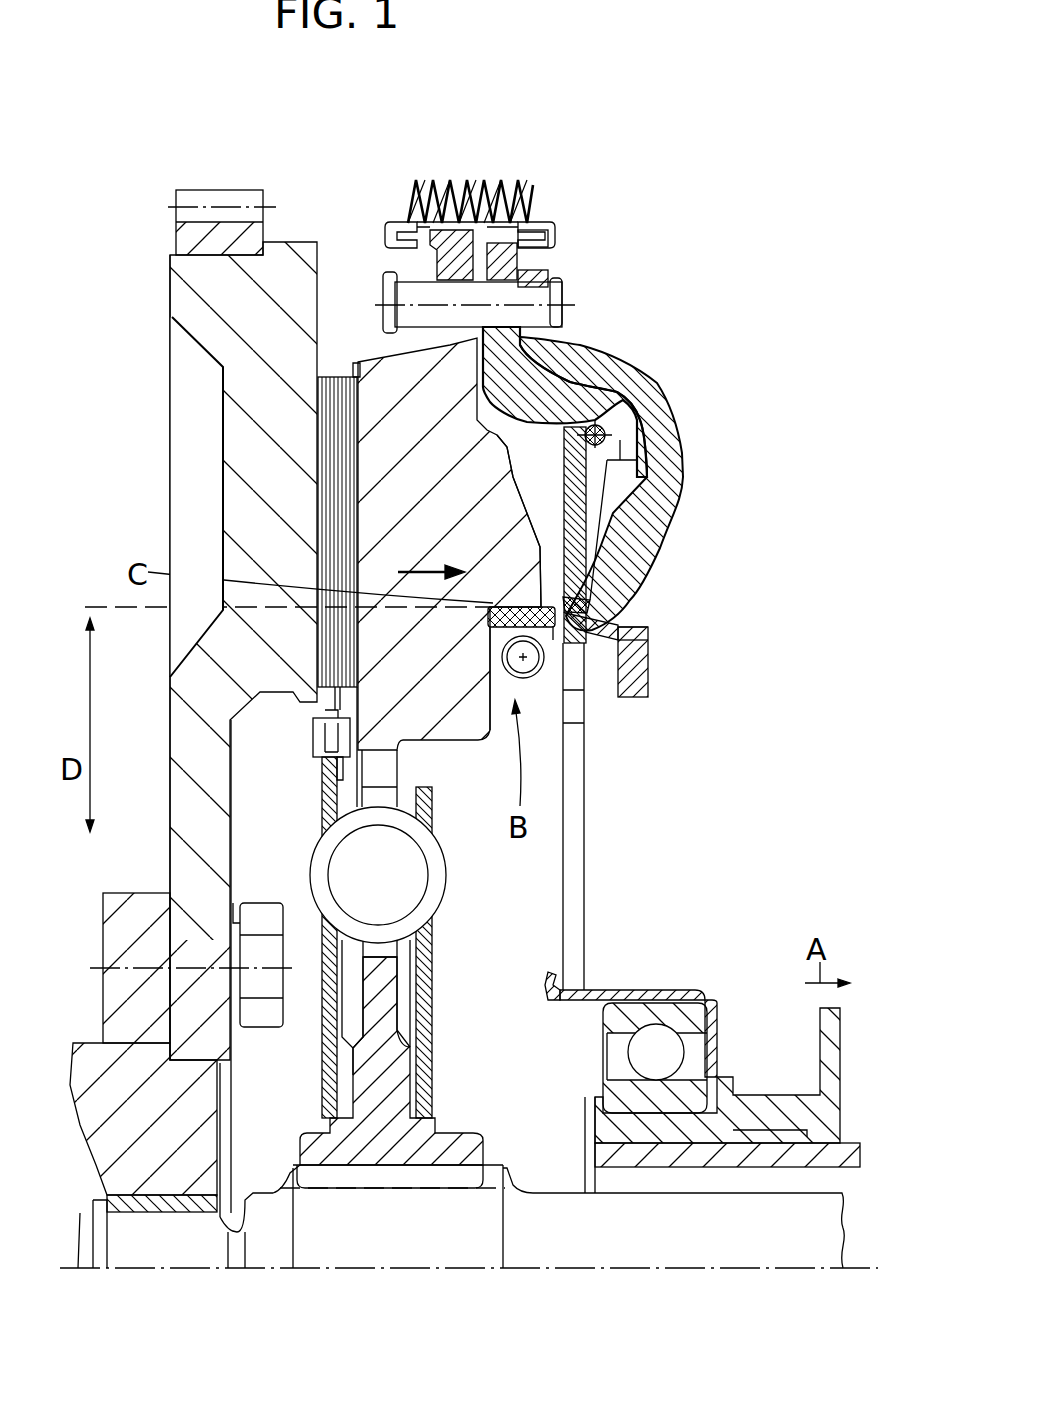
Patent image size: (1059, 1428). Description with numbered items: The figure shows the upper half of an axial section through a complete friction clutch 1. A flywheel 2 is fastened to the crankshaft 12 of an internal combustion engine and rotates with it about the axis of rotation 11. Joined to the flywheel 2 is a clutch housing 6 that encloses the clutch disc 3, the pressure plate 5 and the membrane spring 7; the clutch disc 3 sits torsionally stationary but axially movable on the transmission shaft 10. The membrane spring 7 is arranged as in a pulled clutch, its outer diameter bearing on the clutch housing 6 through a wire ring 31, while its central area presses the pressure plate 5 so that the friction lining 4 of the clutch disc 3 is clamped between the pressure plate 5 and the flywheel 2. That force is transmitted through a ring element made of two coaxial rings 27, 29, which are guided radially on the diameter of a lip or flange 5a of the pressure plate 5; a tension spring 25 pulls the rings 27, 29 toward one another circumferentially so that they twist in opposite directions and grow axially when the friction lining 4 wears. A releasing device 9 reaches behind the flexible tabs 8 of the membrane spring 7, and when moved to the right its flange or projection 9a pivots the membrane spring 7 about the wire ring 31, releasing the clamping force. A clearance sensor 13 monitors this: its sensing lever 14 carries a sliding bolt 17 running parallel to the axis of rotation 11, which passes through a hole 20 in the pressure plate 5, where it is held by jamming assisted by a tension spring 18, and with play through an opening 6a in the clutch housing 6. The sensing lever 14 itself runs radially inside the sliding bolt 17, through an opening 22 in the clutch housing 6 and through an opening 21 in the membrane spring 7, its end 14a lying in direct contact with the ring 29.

The friction clutch 1 is at (635, 158).
The flywheel 2 is at (200, 282).
The clutch disc 3 is at (270, 794).
The friction lining 4 is at (352, 497).
The pressure plate 5 is at (402, 373).
The lip or flange 5a is at (563, 543).
The clutch housing 6 is at (640, 673).
The opening 6a is at (560, 357).
The membrane spring 7 is at (575, 590).
The flexible tabs 8 is at (570, 905).
The releasing device 9 is at (724, 976).
The flange or projection 9a is at (547, 980).
The transmission shaft 10 is at (732, 1258).
The axis of rotation 11 is at (512, 1270).
The crankshaft 12 is at (120, 987).
The clearance sensor 13 is at (732, 279).
The sensing lever 14 is at (670, 440).
The end of the sensing lever 14a is at (630, 628).
The sliding bolt 17 is at (495, 317).
The tension spring 18 is at (462, 186).
The hole 20 is at (570, 280).
The opening 21 is at (572, 668).
The opening 22 is at (628, 490).
The tension spring 25 is at (523, 683).
The ring 27 is at (592, 622).
The ring 29 is at (600, 640).
The wire ring 31 is at (630, 408).